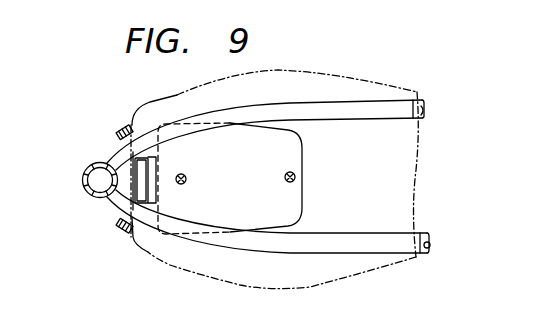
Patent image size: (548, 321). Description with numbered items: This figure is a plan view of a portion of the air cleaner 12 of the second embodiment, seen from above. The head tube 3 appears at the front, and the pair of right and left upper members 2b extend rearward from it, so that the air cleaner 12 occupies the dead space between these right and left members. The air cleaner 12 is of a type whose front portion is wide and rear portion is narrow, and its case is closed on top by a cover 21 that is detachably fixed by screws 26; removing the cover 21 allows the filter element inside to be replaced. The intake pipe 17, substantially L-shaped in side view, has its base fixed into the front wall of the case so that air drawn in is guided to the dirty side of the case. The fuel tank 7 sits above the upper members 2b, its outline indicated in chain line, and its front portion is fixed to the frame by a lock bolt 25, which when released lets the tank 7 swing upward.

The upper members 2b is at (398, 110).
The head tube 3 is at (83, 188).
The fuel tank 7 is at (362, 77).
The air cleaner 12 is at (307, 212).
The intake pipe 17 is at (140, 170).
The cover 21 is at (272, 190).
The lock bolt 25 is at (127, 229).
The screws 26 is at (294, 173).